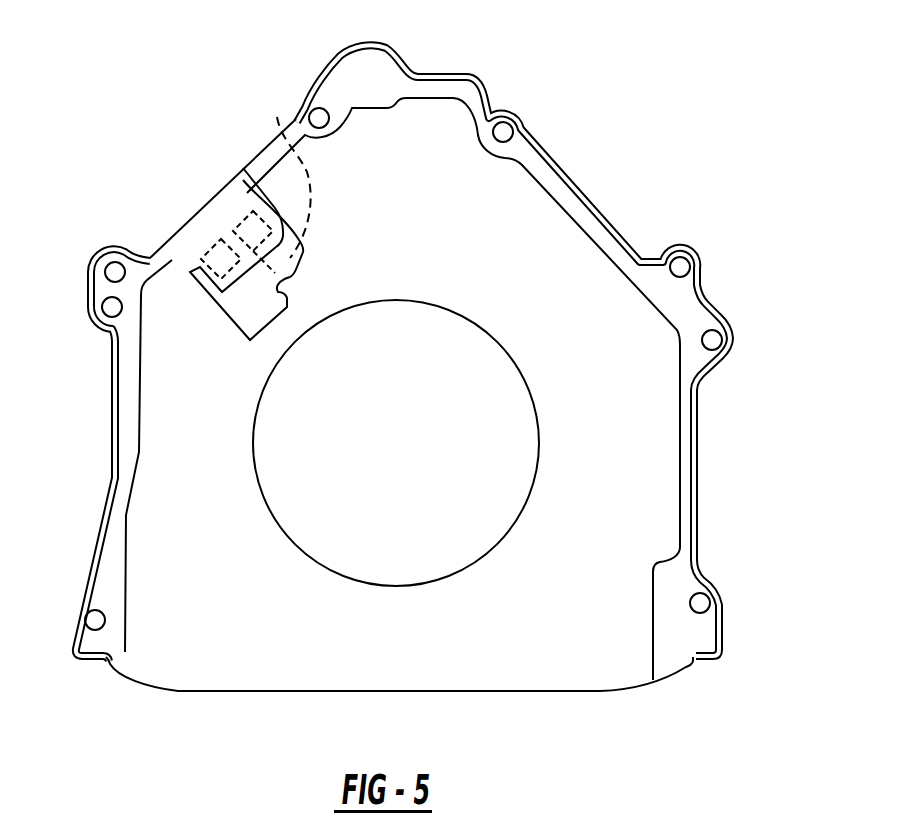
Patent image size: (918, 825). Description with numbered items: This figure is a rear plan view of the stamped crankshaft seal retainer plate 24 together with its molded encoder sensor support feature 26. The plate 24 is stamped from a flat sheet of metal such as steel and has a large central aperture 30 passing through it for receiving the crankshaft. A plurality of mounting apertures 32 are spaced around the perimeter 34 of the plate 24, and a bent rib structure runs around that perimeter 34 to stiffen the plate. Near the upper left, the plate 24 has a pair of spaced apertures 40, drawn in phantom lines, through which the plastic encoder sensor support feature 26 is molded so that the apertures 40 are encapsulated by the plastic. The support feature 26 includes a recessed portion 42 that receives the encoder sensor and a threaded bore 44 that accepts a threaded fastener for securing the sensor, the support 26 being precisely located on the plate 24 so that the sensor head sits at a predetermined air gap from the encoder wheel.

The stamped crankshaft seal retainer plate 24 is at (403, 368).
The molded encoder sensor support feature 26 is at (222, 223).
The central aperture 30 is at (541, 438).
The mounting apertures 32 is at (771, 598).
The perimeter 34 is at (555, 240).
The spaced apertures 40 is at (217, 140).
The recessed portion 42 is at (243, 180).
The threaded bore 44 is at (277, 117).